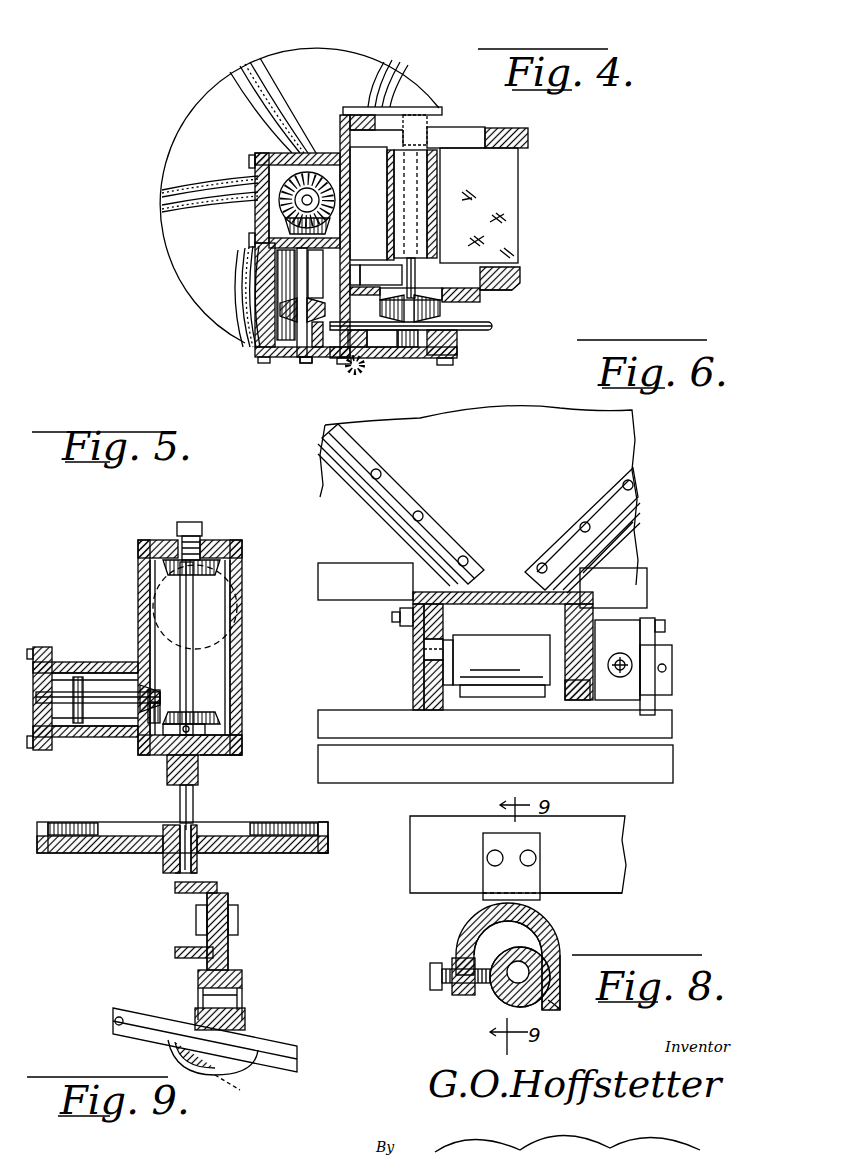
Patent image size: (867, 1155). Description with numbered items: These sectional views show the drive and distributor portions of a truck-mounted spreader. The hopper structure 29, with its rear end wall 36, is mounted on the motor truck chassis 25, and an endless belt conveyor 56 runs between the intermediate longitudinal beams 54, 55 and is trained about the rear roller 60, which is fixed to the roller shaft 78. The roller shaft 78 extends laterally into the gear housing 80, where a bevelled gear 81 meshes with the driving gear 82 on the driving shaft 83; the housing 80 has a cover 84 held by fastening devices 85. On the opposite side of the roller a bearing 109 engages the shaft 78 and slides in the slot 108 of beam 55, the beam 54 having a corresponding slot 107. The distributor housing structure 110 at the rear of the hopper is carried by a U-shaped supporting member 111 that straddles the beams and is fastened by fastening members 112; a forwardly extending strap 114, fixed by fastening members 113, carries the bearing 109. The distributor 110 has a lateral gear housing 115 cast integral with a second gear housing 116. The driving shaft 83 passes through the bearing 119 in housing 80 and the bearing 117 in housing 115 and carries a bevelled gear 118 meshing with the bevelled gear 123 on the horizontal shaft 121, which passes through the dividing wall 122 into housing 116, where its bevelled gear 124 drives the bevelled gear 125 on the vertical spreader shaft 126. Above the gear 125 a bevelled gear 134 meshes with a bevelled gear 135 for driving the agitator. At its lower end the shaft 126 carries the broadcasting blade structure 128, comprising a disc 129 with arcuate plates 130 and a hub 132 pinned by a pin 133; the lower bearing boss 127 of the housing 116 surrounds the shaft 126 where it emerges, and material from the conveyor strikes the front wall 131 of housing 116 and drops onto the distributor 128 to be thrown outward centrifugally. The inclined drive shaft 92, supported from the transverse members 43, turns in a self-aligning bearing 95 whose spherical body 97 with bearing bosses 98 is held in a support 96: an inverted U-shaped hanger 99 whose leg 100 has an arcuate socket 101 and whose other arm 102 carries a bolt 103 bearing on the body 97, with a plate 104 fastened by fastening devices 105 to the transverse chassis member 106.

In FIG. 6, the motor truck chassis 25 is at (683, 776).
In FIG. 6, the hopper structure 29 is at (648, 513).
In FIG. 6, the rear end wall 36 is at (615, 462).
In FIG. 6, the transverse supporting members 43 is at (672, 736).
In FIG. 4, the longitudinal beam 54 is at (516, 292).
In FIG. 6, the longitudinal beam 54 is at (575, 700).
In FIG. 4, the longitudinal beam 55 is at (508, 128).
In FIG. 6, the longitudinal beam 55 is at (412, 698).
In FIG. 4, the belt conveyor 56 is at (530, 226).
In FIG. 6, the belt conveyor 56 is at (520, 697).
In FIG. 4, the roller 60 is at (392, 222).
In FIG. 6, the roller 60 is at (445, 688).
In FIG. 4, the roller shaft 78 is at (406, 275).
In FIG. 6, the roller shaft 78 is at (550, 656).
In FIG. 4, the gear housing 80 is at (450, 300).
In FIG. 4, the bevelled gear 81 is at (408, 348).
In FIG. 4, the driving gear 82 is at (437, 357).
In FIG. 4, the driving shaft 83 is at (490, 334).
In FIG. 6, the driving shaft 83 is at (628, 668).
In FIG. 4, the cover 84 is at (378, 322).
In FIG. 4, the fastening devices 85 is at (450, 365).
In FIG. 6, the fastening devices 85 is at (665, 636).
In FIG. 9, the inclined shaft 92 is at (287, 1046).
In FIG. 8, the inclined shaft 92 is at (546, 1010).
In FIG. 8, the self-aligning bearing 95 is at (543, 948).
In FIG. 9, the bearing supporting member 96 is at (244, 969).
In FIG. 8, the bearing supporting member 96 is at (540, 884).
In FIG. 9, the spherical body 97 is at (248, 1012).
In FIG. 8, the spherical body 97 is at (489, 963).
In FIG. 9, the bearing bosses 98 is at (172, 1048).
In FIG. 9, the inverted U-shaped hanger 99 is at (245, 990).
In FIG. 8, the inverted U-shaped hanger 99 is at (454, 936).
In FIG. 9, the leg 100 is at (197, 1003).
In FIG. 8, the leg 100 is at (562, 957).
In FIG. 9, the arcuate socket 101 is at (232, 1080).
In FIG. 8, the arcuate socket 101 is at (556, 1004).
In FIG. 8, the arm 102 is at (466, 996).
In FIG. 8, the bolt 103 is at (430, 978).
In FIG. 9, the plate 104 is at (235, 945).
In FIG. 8, the plate 104 is at (484, 863).
In FIG. 9, the fastening devices 105 is at (250, 926).
In FIG. 8, the fastening devices 105 is at (503, 853).
In FIG. 9, the chassis member 106 is at (180, 953).
In FIG. 8, the chassis member 106 is at (612, 846).
In FIG. 4, the slot 107 is at (522, 277).
In FIG. 6, the slot 107 is at (600, 632).
In FIG. 4, the slot 108 is at (462, 130).
In FIG. 6, the slot 108 is at (412, 640).
In FIG. 4, the bearing 109 is at (442, 145).
In FIG. 4, the distributor housing structure 110 is at (319, 143).
In FIG. 6, the U-shaped supporting member 111 is at (500, 587).
In FIG. 6, the fastening members 112 is at (400, 625).
In FIG. 4, the fastening members 113 is at (372, 98).
In FIG. 4, the strap 114 is at (405, 107).
In FIG. 4, the gear housing 115 is at (254, 316).
In FIG. 5, the gear housing 115 is at (62, 662).
In FIG. 4, the gear housing 116 is at (285, 153).
In FIG. 5, the gear housing 116 is at (254, 674).
In FIG. 4, the bearing 117 is at (333, 358).
In FIG. 4, the bevelled gear 118 is at (302, 359).
In FIG. 4, the bearing 119 is at (345, 360).
In FIG. 6, the bearing 119 is at (675, 692).
In FIG. 4, the horizontal shaft 121 is at (252, 275).
In FIG. 5, the horizontal shaft 121 is at (108, 690).
In FIG. 4, the dividing wall 122 is at (262, 240).
In FIG. 4, the bevelled gear 123 is at (258, 305).
In FIG. 5, the bevelled gear 123 is at (72, 738).
In FIG. 4, the bevelled gear 124 is at (390, 200).
In FIG. 5, the bevelled gear 124 is at (132, 745).
In FIG. 4, the bevelled gear 125 is at (262, 185).
In FIG. 5, the bevelled gear 125 is at (208, 720).
In FIG. 4, the spreader shaft 126 is at (300, 203).
In FIG. 5, the spreader shaft 126 is at (193, 672).
In FIG. 5, the bearing boss 127 is at (160, 770).
In FIG. 5, the broadcasting blade structure 128 is at (262, 840).
In FIG. 5, the disc 129 is at (298, 853).
In FIG. 4, the arcuate plates 130 is at (190, 186).
In FIG. 5, the arcuate plates 130 is at (306, 845).
In FIG. 5, the front wall 131 is at (243, 735).
In FIG. 5, the hub 132 is at (165, 870).
In FIG. 5, the pin 133 is at (177, 875).
In FIG. 5, the bevelled gear 134 is at (138, 575).
In FIG. 5, the bevelled gear 135 is at (222, 598).